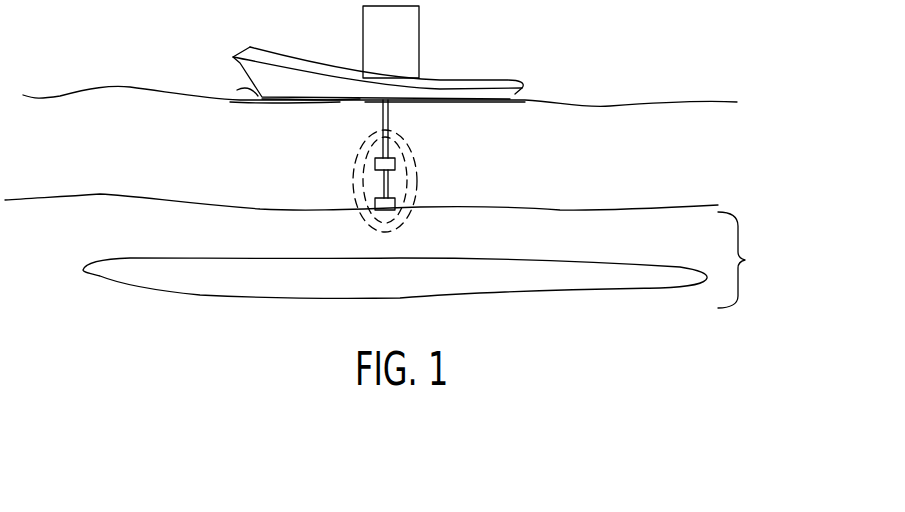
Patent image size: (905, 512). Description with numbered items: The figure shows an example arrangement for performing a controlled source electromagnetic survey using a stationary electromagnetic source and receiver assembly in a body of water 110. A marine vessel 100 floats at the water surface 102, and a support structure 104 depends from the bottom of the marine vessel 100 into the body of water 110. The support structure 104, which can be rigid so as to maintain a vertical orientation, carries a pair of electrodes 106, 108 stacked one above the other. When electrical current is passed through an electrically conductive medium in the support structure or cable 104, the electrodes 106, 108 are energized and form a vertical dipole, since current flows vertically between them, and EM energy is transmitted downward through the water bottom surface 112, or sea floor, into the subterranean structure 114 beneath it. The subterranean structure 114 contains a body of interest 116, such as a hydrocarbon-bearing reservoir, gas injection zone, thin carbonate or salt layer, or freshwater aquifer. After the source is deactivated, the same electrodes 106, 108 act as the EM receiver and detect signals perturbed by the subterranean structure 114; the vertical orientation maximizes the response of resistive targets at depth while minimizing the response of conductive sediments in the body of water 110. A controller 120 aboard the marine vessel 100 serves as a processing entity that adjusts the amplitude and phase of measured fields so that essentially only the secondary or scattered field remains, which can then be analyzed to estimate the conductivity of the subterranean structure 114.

The marine vessel 100 is at (518, 69).
The water surface 102 is at (625, 102).
The support structure 104 is at (389, 122).
The electrode 106 is at (396, 158).
The electrode 108 is at (397, 198).
The body of water 110 is at (643, 167).
The water bottom surface 112 is at (640, 207).
The subterranean structure 114 is at (745, 260).
The body of interest 116 is at (437, 287).
The controller 120 is at (420, 28).